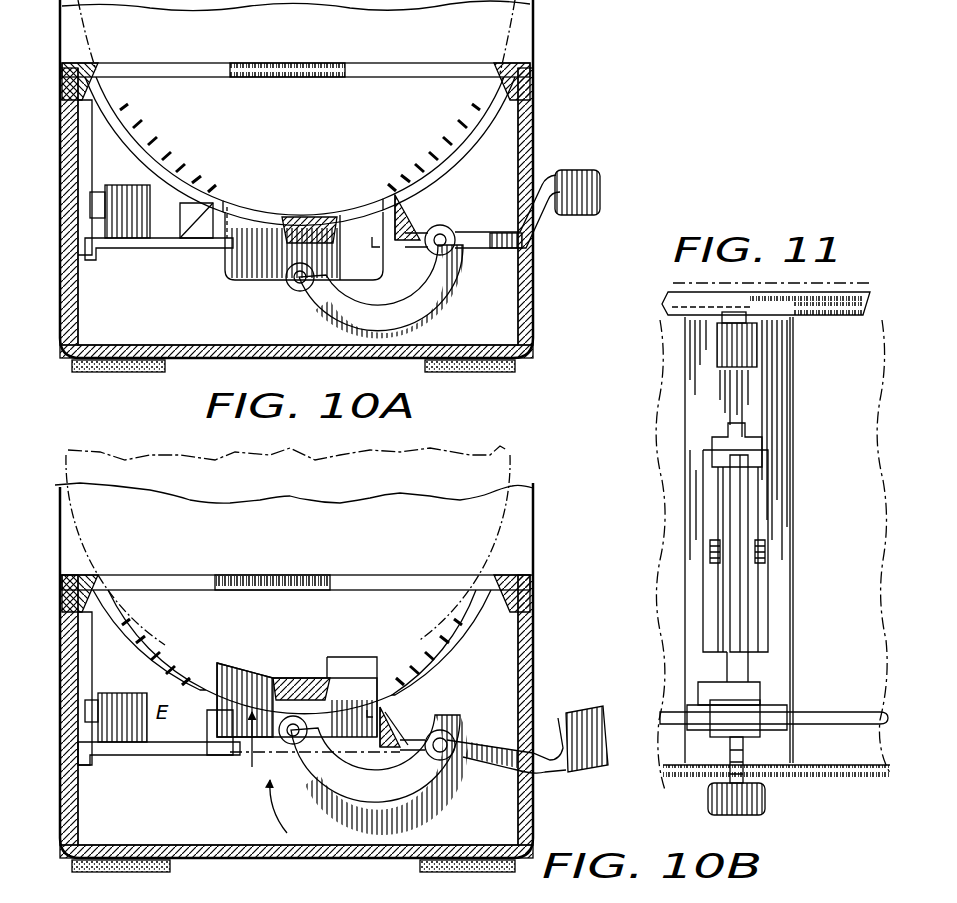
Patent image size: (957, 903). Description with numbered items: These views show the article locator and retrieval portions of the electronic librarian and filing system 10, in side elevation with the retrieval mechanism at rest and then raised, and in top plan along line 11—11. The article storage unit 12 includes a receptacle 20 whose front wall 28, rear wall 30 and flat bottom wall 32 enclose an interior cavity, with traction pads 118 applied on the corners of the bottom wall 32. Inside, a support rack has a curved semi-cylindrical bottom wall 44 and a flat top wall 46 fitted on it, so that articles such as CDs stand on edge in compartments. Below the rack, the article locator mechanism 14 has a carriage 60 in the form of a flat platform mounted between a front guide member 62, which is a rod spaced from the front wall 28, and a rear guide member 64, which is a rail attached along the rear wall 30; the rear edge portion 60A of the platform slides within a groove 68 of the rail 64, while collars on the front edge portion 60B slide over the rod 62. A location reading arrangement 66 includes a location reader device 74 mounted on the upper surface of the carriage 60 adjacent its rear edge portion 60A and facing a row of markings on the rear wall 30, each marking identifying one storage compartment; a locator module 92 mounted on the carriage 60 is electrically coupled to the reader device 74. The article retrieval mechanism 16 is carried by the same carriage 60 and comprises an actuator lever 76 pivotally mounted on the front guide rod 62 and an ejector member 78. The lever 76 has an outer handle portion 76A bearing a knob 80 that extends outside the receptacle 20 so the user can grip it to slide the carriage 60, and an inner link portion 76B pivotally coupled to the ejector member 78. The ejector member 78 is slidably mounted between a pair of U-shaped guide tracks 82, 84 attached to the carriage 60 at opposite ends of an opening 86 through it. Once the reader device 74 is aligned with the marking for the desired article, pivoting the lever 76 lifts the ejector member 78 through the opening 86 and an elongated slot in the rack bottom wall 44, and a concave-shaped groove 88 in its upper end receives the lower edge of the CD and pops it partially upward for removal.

In FIG. 10A, the electronic librarian and filing system 10 is at (572, 42).
In FIG. 10B, the electronic librarian and filing system 10 is at (552, 550).
In FIG. 10A, the section line 11— 11 is at (48, 178).
In FIG. 10A, the article storage unit 12 is at (540, 303).
In FIG. 10B, the article storage unit 12 is at (540, 608).
In FIG. 10A, the article locator mechanism 14 is at (148, 228).
In FIG. 10B, the article locator mechanism 14 is at (140, 690).
In FIG. 11, the article locator mechanism 14 is at (712, 335).
In FIG. 10A, the article retrieval mechanism 16 is at (330, 188).
In FIG. 10B, the article retrieval mechanism 16 is at (328, 660).
In FIG. 10A, the receptacle 20 is at (538, 85).
In FIG. 10B, the receptacle 20 is at (296, 593).
In FIG. 10A, the front wall 28 is at (536, 140).
In FIG. 10B, the front wall 28 is at (536, 652).
In FIG. 10A, the rear wall 30 is at (118, 90).
In FIG. 10B, the rear wall 30 is at (118, 580).
In FIG. 10A, the bottom wall 32 is at (262, 350).
In FIG. 10B, the bottom wall 32 is at (268, 850).
In FIG. 10A, the bottom wall of support rack 44 is at (458, 150).
In FIG. 10B, the bottom wall of support rack 44 is at (472, 628).
In FIG. 10A, the top wall of support rack 46 is at (410, 68).
In FIG. 10B, the top wall of support rack 46 is at (186, 574).
In FIG. 10B, the carriage 60 is at (180, 758).
In FIG. 11, the carriage 60 is at (698, 400).
In FIG. 10B, the rear edge portion of carriage 60A is at (96, 758).
In FIG. 10B, the front edge portion of carriage 60B is at (405, 712).
In FIG. 10A, the front guide member (rod) 62 is at (452, 252).
In FIG. 10B, the front guide member (rod) 62 is at (455, 735).
In FIG. 11, the front guide member (rod) 62 is at (793, 562).
In FIG. 10A, the rear guide member (rail) 64 is at (100, 258).
In FIG. 10B, the rear guide member (rail) 64 is at (88, 768).
In FIG. 11, the rear guide member (rail) 64 is at (818, 318).
In FIG. 10A, the location reading arrangement 66 is at (170, 158).
In FIG. 10B, the location reading arrangement 66 is at (149, 640).
In FIG. 10A, the groove 68 is at (112, 255).
In FIG. 10A, the location reader device 74 is at (128, 180).
In FIG. 10B, the location reader device 74 is at (122, 692).
In FIG. 10A, the actuator lever 76 is at (498, 226).
In FIG. 10B, the actuator lever 76 is at (540, 775).
In FIG. 11, the actuator lever 76 is at (755, 756).
In FIG. 10A, the outer handle portion 76A is at (530, 250).
In FIG. 10B, the outer handle portion 76A is at (496, 768).
In FIG. 11, the outer handle portion 76A is at (735, 745).
In FIG. 10A, the inner link portion 76B is at (438, 305).
In FIG. 10B, the inner link portion 76B is at (400, 800).
In FIG. 11, the inner link portion 76B is at (720, 610).
In FIG. 10A, the ejector member 78 is at (360, 210).
In FIG. 10B, the ejector member 78 is at (354, 690).
In FIG. 11, the ejector member 78 is at (762, 488).
In FIG. 10A, the knob 80 is at (600, 190).
In FIG. 10B, the knob 80 is at (606, 766).
In FIG. 11, the knob 80 is at (772, 516).
In FIG. 10A, the guide track 82 is at (412, 222).
In FIG. 10B, the guide track 82 is at (396, 685).
In FIG. 11, the guide track 82 is at (760, 664).
In FIG. 10A, the guide track 84 is at (198, 218).
In FIG. 10B, the guide track 84 is at (244, 683).
In FIG. 11, the guide track 84 is at (760, 442).
In FIG. 10A, the opening 86 is at (240, 275).
In FIG. 10B, the opening 86 is at (244, 758).
In FIG. 10A, the concave-shaped groove 88 is at (300, 215).
In FIG. 10B, the concave-shaped groove 88 is at (304, 678).
In FIG. 11, the concave-shaped groove 88 is at (735, 618).
In FIG. 10A, the locator module 92 is at (140, 252).
In FIG. 10B, the locator module 92 is at (128, 752).
In FIG. 10A, the traction pads 118 is at (125, 373).
In FIG. 10B, the traction pads 118 is at (150, 872).